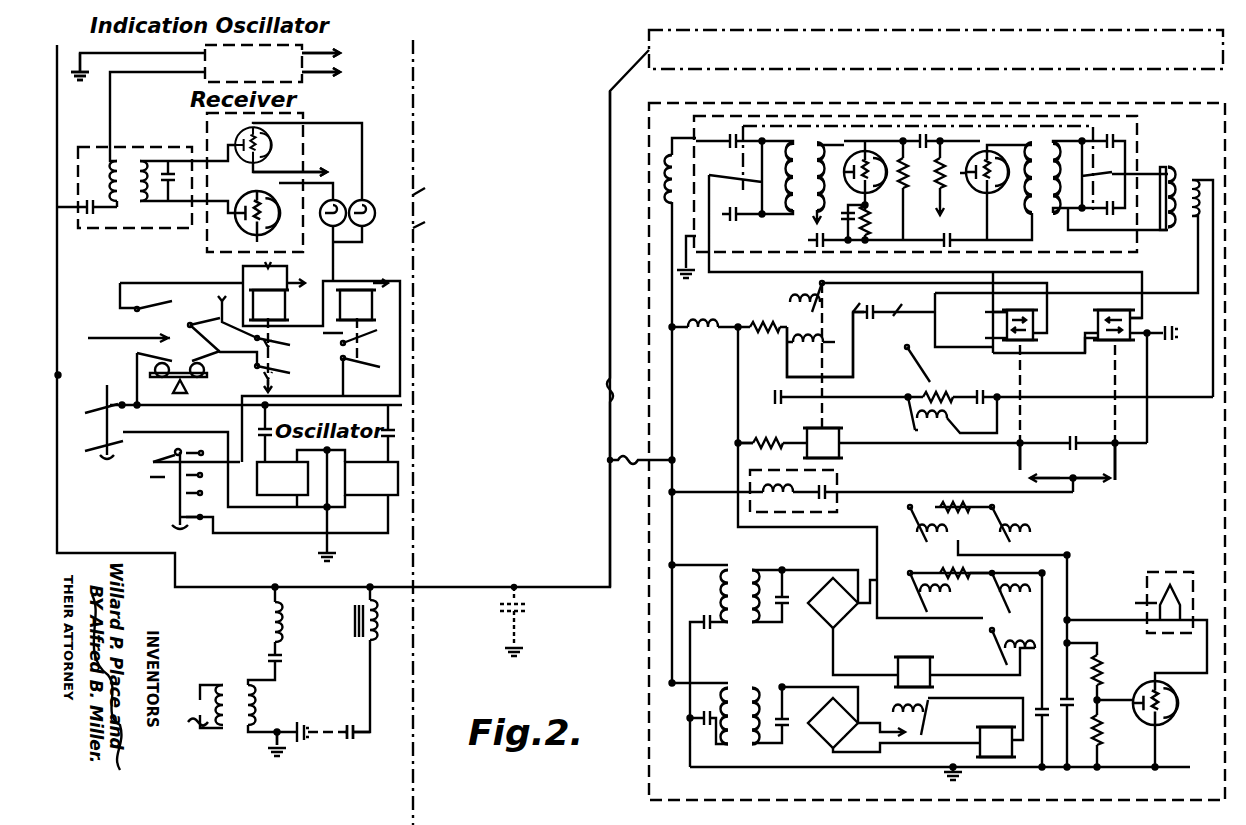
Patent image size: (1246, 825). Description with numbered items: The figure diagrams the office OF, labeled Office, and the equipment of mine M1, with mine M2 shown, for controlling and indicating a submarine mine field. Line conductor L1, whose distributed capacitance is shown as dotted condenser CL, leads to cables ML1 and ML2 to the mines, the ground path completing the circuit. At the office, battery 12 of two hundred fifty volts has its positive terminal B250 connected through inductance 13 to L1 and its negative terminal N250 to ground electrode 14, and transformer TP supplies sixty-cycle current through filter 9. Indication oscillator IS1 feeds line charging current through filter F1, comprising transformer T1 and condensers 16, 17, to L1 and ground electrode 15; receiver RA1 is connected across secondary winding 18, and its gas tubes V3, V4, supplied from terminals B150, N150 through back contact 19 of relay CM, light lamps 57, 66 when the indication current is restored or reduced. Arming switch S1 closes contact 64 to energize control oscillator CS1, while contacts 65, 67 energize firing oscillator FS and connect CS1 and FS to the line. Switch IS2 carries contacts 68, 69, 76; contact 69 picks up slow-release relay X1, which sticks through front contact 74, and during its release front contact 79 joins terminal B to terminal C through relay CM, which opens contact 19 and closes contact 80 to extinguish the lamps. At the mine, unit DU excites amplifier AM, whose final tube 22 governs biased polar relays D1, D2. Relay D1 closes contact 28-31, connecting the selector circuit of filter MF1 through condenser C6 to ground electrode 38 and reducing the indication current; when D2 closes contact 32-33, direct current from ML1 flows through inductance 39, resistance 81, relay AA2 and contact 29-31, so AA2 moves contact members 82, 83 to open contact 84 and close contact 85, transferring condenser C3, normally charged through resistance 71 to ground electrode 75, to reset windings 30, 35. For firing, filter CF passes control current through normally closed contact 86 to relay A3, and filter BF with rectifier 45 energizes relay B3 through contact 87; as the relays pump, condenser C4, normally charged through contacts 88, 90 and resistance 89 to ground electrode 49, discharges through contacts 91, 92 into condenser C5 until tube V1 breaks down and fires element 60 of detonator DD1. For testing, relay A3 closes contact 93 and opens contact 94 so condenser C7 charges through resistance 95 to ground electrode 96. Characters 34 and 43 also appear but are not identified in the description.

The ground electrode 15 is at (82, 82).
The filter F1 is at (100, 147).
The transformer T1 is at (122, 158).
The condenser 17 is at (150, 203).
The secondary winding 18 is at (168, 160).
The condenser 16 is at (90, 215).
The gas filled electron tube V3 is at (267, 148).
The gas filled electron tube V4 is at (247, 201).
The negative terminal N150 is at (311, 162).
The indication lamp 66 is at (340, 202).
The indication lamp 57 is at (377, 202).
The receiver RA1 is at (207, 250).
The indication oscillator IS1 is at (105, 395).
The positive terminal B250 is at (75, 463).
The negative terminal N250 is at (265, 745).
The contact 69 is at (172, 301).
The contact 68 is at (197, 322).
The terminal B is at (162, 306).
The terminal C is at (346, 274).
The office relay X1 is at (282, 305).
The relay CM is at (373, 303).
The back contact 19 is at (373, 327).
The front contact 74 is at (289, 337).
The front contact 79 is at (290, 367).
The positive terminal B150 is at (231, 433).
The front contact 80 is at (363, 376).
The contact 76 is at (218, 367).
The switch IS2 is at (186, 388).
The contact 67 is at (90, 405).
The contact 65 is at (118, 440).
The arming switch S1 is at (175, 452).
The contact 64 is at (188, 515).
The firing oscillator FS is at (287, 496).
The control oscillator CS1 is at (377, 496).
The filter 9 is at (270, 617).
The transformer TP is at (246, 683).
The detonator element 60 is at (670, 658).
The battery 12 is at (302, 722).
The ground electrode 14 is at (284, 752).
The inductance 13 is at (382, 615).
The office Office is at (454, 191).
The office OF is at (438, 226).
The condenser CL is at (530, 607).
The cable ML2 is at (608, 366).
The cable L1 is at (608, 535).
The cable ML1 is at (660, 465).
The mine M2 is at (649, 40).
The mine M1 is at (692, 103).
The amplifier AM is at (1045, 116).
The detecting unit DU is at (1172, 160).
The final stage tube 22 is at (1204, 186).
The inductance 39 is at (704, 333).
The resistance 71 is at (765, 325).
The contact member 82 is at (802, 305).
The contact member 83 is at (822, 345).
The contact 84 is at (793, 348).
The contact 85 is at (849, 301).
The condenser C3 is at (866, 318).
The ground electrode 75 is at (913, 298).
The contact 93 is at (906, 380).
The resistance 95 is at (955, 385).
The condenser C7 is at (985, 392).
The ground electrode 96 is at (774, 400).
The contact 94 is at (952, 415).
The resistance 81 is at (778, 431).
The bias polar relay AA2 is at (828, 430).
The filter MF1 is at (837, 492).
The contact 29 is at (982, 311).
The reset winding 30 is at (982, 336).
The indication relay D1 is at (1033, 318).
The indication relay D2 is at (1112, 310).
The relay contact 34 is at (1142, 318).
The reset winding 35 is at (1100, 345).
The ground electrode 38 is at (1170, 343).
The contact 28 is at (1018, 467).
The contact 31 is at (1045, 466).
The contact 33 is at (1091, 466).
The contact 32 is at (1117, 470).
The condenser C6 is at (1078, 430).
The contact 91 is at (906, 541).
The contact 92 is at (982, 522).
The resistance 89 is at (950, 595).
The contact 88 is at (930, 613).
The contact 90 is at (1010, 614).
The contact 86 is at (1000, 666).
The filter CF is at (741, 613).
The rectifier 43 is at (826, 629).
The control relay A3 is at (898, 661).
The filter BF is at (741, 745).
The rectifier 45 is at (826, 749).
The contact 87 is at (903, 736).
The control relay B3 is at (982, 729).
The condenser C4 is at (1038, 704).
The condenser C5 is at (1075, 702).
The tube V1 is at (1173, 715).
The ground electrode 49 is at (965, 781).
The detonator DD1 is at (1147, 590).